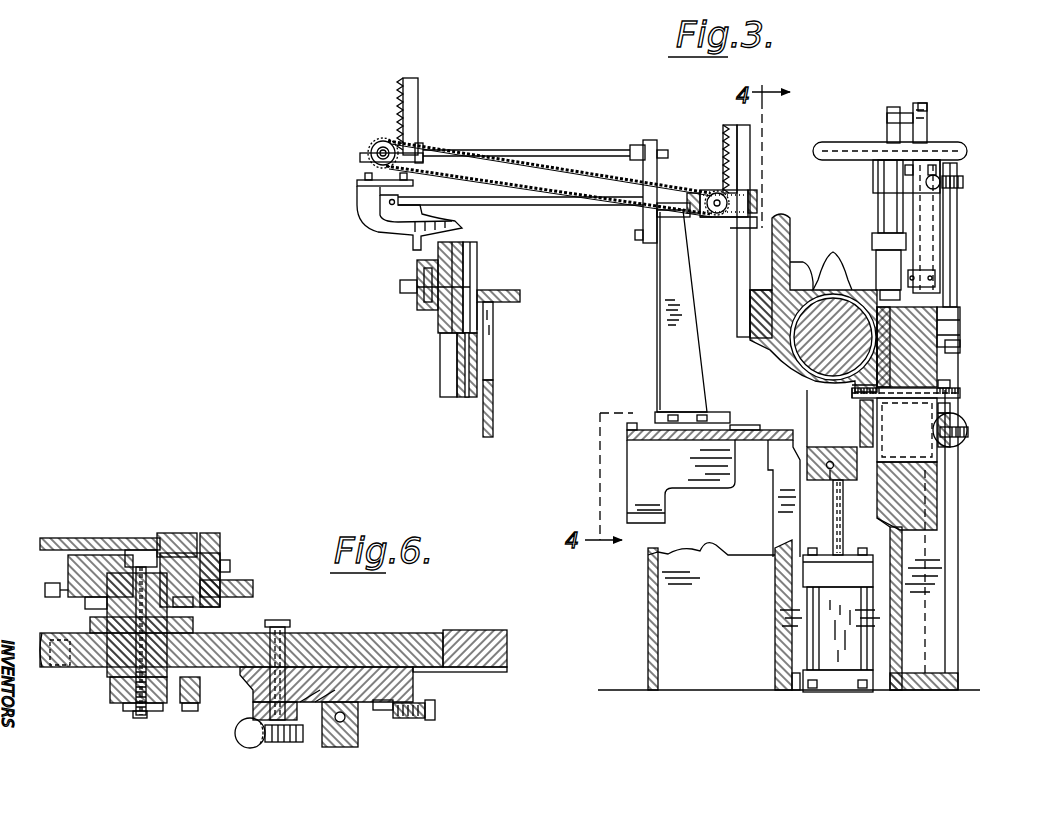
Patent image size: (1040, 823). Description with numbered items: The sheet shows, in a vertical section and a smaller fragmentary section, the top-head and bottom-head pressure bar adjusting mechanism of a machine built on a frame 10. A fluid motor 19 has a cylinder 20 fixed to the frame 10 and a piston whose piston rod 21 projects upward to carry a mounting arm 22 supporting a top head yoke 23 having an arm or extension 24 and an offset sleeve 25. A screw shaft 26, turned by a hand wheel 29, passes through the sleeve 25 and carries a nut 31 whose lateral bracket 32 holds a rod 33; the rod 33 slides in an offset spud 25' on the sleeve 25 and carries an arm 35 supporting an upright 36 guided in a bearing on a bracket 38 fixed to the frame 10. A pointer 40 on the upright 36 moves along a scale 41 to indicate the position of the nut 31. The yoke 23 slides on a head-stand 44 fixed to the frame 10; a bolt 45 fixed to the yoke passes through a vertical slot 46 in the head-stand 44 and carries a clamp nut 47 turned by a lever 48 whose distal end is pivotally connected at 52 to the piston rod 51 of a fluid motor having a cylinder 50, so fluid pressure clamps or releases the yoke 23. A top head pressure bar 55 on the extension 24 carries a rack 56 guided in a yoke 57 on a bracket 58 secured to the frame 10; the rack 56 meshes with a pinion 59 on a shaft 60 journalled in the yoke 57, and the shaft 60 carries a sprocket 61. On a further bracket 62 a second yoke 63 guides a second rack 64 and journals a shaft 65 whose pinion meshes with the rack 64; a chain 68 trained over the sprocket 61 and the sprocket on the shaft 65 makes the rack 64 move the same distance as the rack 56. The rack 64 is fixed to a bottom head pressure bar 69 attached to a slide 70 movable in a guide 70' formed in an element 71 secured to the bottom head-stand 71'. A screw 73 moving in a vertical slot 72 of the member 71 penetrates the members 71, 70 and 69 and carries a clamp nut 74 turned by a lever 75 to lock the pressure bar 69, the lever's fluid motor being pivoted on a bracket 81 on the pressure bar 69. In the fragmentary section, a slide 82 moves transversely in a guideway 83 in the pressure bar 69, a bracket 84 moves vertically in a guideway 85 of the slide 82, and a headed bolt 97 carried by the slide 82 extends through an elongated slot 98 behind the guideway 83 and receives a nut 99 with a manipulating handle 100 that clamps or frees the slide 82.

In FIG. 3, the frame 10 is at (648, 611).
In FIG. 3, the fluid motor 19 is at (797, 574).
In FIG. 3, the cylinder 20 is at (818, 647).
In FIG. 3, the piston rod 21 is at (843, 525).
In FIG. 3, the mounting arm 22 is at (829, 480).
In FIG. 3, the top head yoke 23 is at (846, 297).
In FIG. 3, the arm or extension 24 is at (786, 266).
In FIG. 3, the offset sleeve 25 is at (949, 228).
In FIG. 3, the offset spud 25' is at (969, 322).
In FIG. 3, the screw shaft 26 is at (873, 428).
In FIG. 3, the hand wheel 29 is at (965, 150).
In FIG. 3, the nut 31 is at (852, 388).
In FIG. 3, the bracket 32 is at (960, 338).
In FIG. 3, the rod 33 is at (952, 262).
In FIG. 3, the arm 35 is at (958, 186).
In FIG. 3, the upright 36 is at (887, 131).
In FIG. 3, the bracket 38 is at (930, 227).
In FIG. 3, the pointer 40 is at (905, 105).
In FIG. 3, the scale 41 is at (928, 128).
In FIG. 3, the head-stand 44 is at (920, 375).
In FIG. 3, the bolt 45 is at (960, 389).
In FIG. 3, the vertical slot 46 is at (936, 466).
In FIG. 3, the clamp nut 47 is at (951, 382).
In FIG. 3, the lever 48 is at (950, 405).
In FIG. 3, the cylinder 50 is at (958, 445).
In FIG. 3, the piston rod 51 is at (960, 422).
In FIG. 3, the pivotal connection 52 is at (970, 432).
In FIG. 3, the top head pressure bar 55 is at (760, 341).
In FIG. 3, the rack 56 is at (740, 278).
In FIG. 3, the yoke 57 is at (758, 198).
In FIG. 3, the bracket 58 is at (660, 300).
In FIG. 3, the pinion 59 is at (722, 218).
In FIG. 3, the shaft 60 is at (716, 193).
In FIG. 3, the sprocket 61 is at (700, 190).
In FIG. 3, the bracket 62 is at (368, 226).
In FIG. 6, the bracket 62 is at (220, 553).
In FIG. 3, the second yoke 63 is at (375, 142).
In FIG. 3, the second rack 64 is at (418, 102).
In FIG. 3, the shaft 65 is at (378, 155).
In FIG. 3, the chain 68 is at (585, 172).
In FIG. 3, the bottom head pressure bar 69 is at (440, 320).
In FIG. 6, the bottom head pressure bar 69 is at (248, 632).
In FIG. 3, the slide 70 is at (446, 301).
In FIG. 6, the slide 70 is at (166, 625).
In FIG. 3, the guide 70' is at (439, 365).
In FIG. 6, the guide 70' is at (190, 553).
In FIG. 3, the element 71 is at (458, 379).
In FIG. 6, the element 71 is at (140, 557).
In FIG. 3, the bottom head-stand 71' is at (511, 363).
In FIG. 6, the bottom head-stand 71' is at (118, 531).
In FIG. 3, the vertical slot 72 is at (466, 358).
In FIG. 6, the vertical slot 72 is at (140, 550).
In FIG. 3, the screw 73 is at (400, 286).
In FIG. 6, the screw 73 is at (140, 718).
In FIG. 3, the clamp nut 74 is at (417, 292).
In FIG. 6, the clamp nut 74 is at (125, 708).
In FIG. 3, the lever 75 is at (428, 306).
In FIG. 6, the lever 75 is at (115, 690).
In FIG. 6, the bracket 81 is at (62, 670).
In FIG. 6, the slide 82 is at (412, 687).
In FIG. 6, the guideway 83 is at (500, 672).
In FIG. 6, the bracket 84 is at (358, 740).
In FIG. 6, the guideway 85 is at (320, 680).
In FIG. 6, the headed bolt 97 is at (285, 643).
In FIG. 6, the elongated slot 98 is at (443, 642).
In FIG. 6, the nut 99 is at (290, 742).
In FIG. 6, the manipulating handle 100 is at (240, 736).